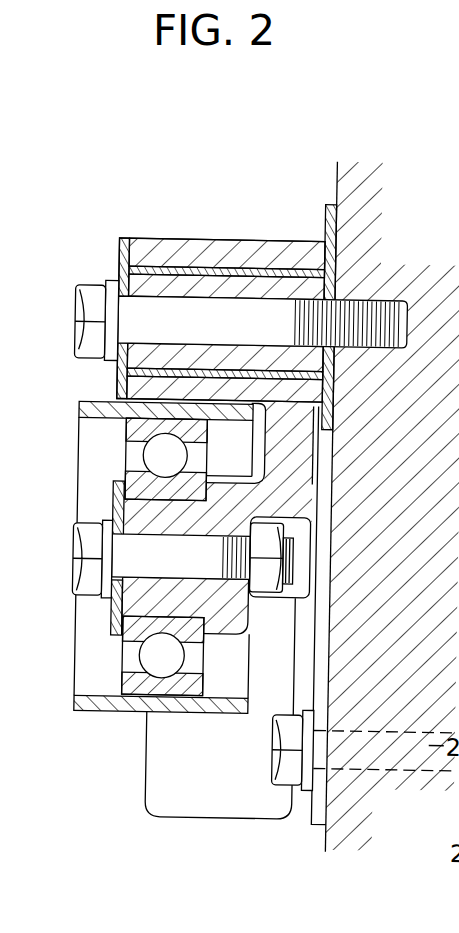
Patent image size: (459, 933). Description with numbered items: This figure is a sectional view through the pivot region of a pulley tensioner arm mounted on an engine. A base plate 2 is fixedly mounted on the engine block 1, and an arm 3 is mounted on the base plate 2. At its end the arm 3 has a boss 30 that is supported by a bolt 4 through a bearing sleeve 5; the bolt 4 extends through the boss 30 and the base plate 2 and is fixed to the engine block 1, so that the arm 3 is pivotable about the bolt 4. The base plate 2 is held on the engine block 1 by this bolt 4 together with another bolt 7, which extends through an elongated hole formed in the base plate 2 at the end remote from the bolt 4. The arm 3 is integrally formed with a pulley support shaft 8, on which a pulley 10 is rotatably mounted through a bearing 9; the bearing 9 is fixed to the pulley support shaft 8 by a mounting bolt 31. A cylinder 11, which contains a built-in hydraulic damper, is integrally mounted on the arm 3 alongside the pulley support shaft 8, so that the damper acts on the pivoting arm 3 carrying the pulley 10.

The engine block 1 is at (329, 181).
The base plate 2 is at (325, 230).
The arm 3 is at (301, 457).
The bolt 4 is at (200, 313).
The bearing sleeve 5 is at (153, 269).
The bolt 7 is at (290, 764).
The pulley support shaft 8 is at (144, 603).
The bearing 9 is at (122, 480).
The pulley 10 is at (113, 414).
The cylinder 11 is at (167, 756).
The boss 30 is at (136, 254).
The mounting bolt 31 is at (84, 540).